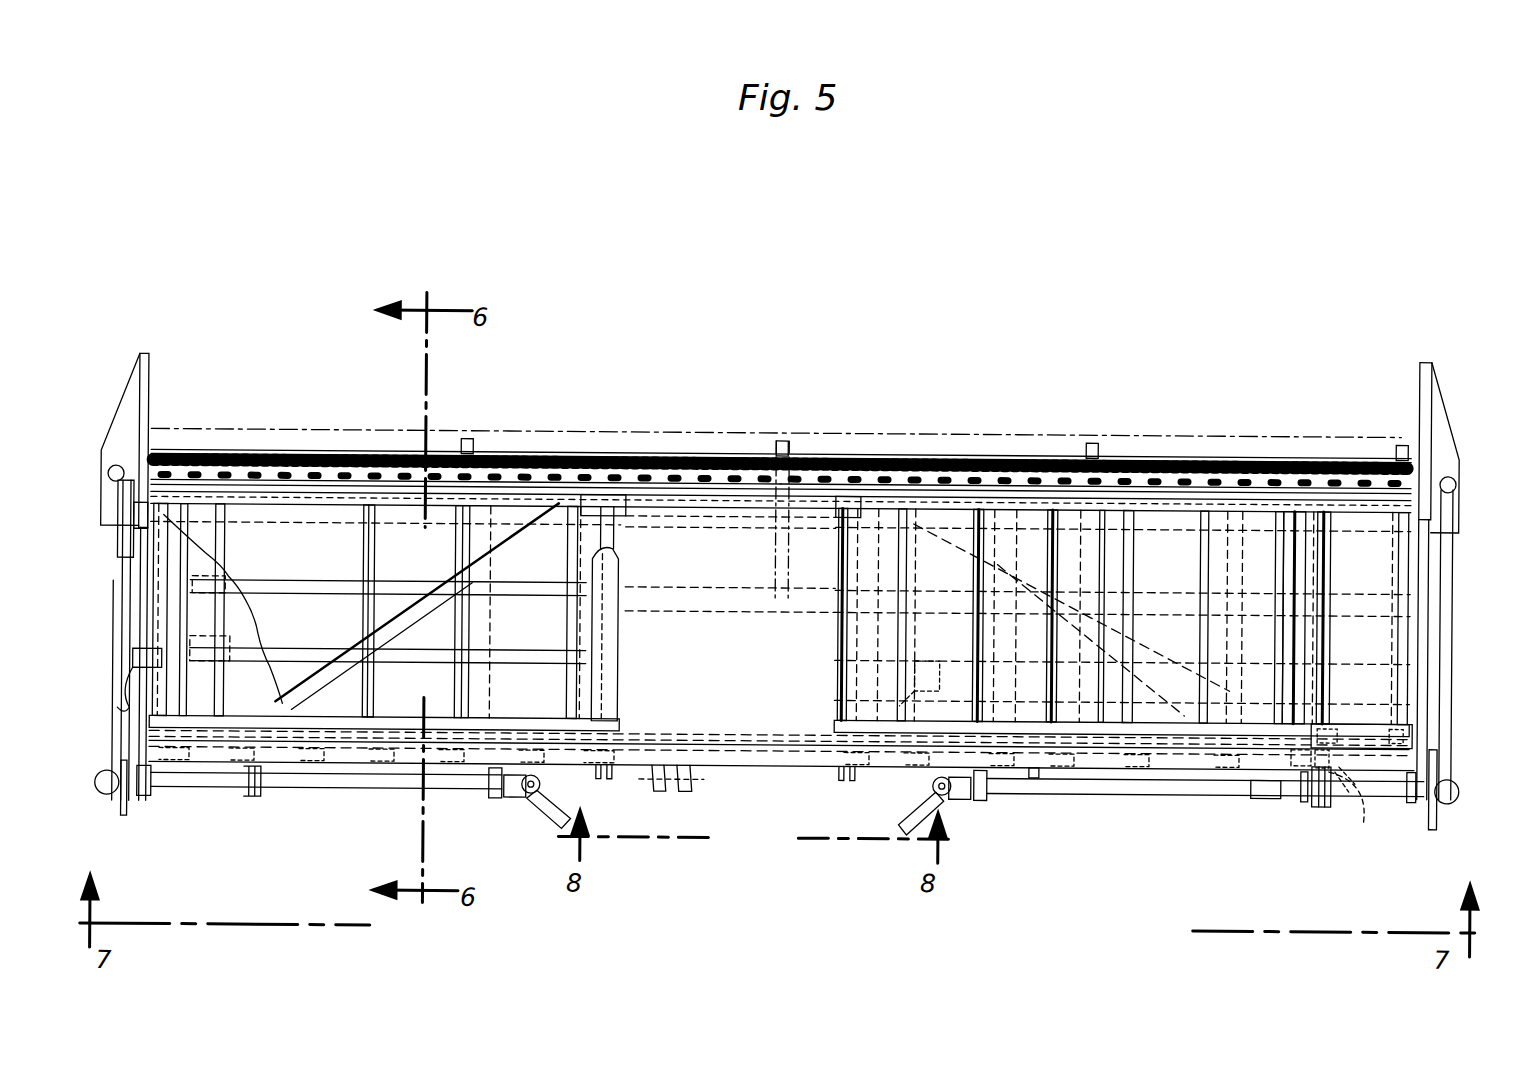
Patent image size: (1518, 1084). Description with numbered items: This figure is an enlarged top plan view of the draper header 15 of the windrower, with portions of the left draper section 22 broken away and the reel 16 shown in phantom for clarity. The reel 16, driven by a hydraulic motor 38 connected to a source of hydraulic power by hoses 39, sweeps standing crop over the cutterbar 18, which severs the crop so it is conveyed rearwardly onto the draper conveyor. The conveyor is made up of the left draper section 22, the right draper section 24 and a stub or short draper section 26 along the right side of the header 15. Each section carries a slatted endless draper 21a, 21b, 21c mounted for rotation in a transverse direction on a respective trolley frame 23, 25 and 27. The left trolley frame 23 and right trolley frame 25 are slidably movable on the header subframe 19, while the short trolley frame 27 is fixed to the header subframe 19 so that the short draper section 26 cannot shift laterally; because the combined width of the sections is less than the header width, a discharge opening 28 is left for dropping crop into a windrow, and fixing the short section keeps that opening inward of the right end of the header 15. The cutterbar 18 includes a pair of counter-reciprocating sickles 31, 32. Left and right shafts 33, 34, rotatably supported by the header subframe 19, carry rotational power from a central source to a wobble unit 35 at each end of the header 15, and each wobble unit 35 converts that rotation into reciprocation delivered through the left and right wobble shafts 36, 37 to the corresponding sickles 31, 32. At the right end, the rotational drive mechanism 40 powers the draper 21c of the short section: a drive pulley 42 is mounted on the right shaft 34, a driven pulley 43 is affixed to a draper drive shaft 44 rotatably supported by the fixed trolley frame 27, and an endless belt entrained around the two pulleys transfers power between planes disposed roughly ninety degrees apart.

The header 15 is at (988, 350).
The reel 16 is at (1040, 433).
The cutterbar 18 is at (720, 467).
The header subframe 19 is at (750, 766).
The slatted endless draper 21a is at (240, 625).
The slatted endless draper 21b is at (835, 662).
The slatted endless draper 21c is at (1385, 556).
The left draper section 22 is at (312, 530).
The left trolley frame 23 is at (383, 543).
The right draper section 24 is at (946, 550).
The right trolley frame 25 is at (930, 688).
The short draper section 26 is at (1360, 525).
The short trolley frame 27 is at (1365, 720).
The discharge opening 28 is at (790, 718).
The sickle 31 is at (497, 460).
The sickle 32 is at (1212, 470).
The left shaft 33 is at (325, 786).
The right shaft 34 is at (1185, 789).
The wobble unit 35 is at (110, 805).
The left wobble shaft 36 is at (117, 590).
The right wobble shaft 37 is at (1452, 573).
The hydraulic motor 38 is at (128, 695).
The hoses 39 is at (120, 712).
The rotational drive mechanism 40 is at (1305, 826).
The drive pulley 42 is at (1330, 803).
The driven pulley 43 is at (1365, 806).
The draper drive shaft 44 is at (1292, 754).